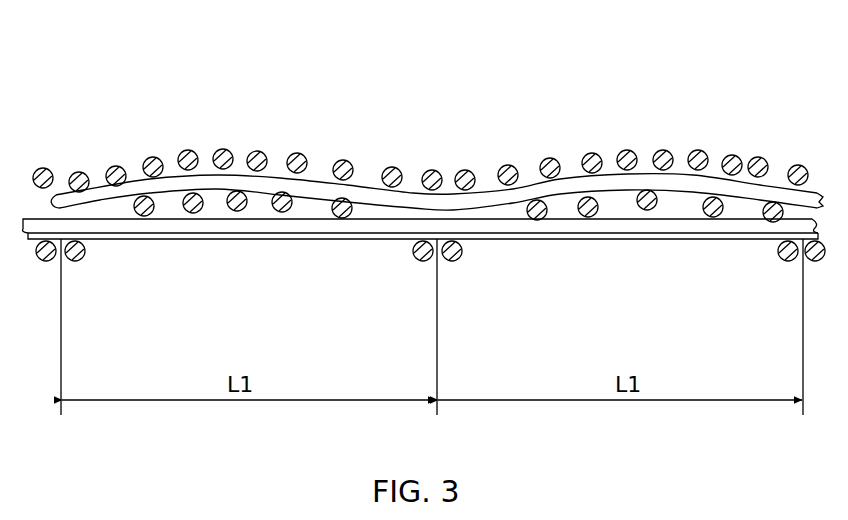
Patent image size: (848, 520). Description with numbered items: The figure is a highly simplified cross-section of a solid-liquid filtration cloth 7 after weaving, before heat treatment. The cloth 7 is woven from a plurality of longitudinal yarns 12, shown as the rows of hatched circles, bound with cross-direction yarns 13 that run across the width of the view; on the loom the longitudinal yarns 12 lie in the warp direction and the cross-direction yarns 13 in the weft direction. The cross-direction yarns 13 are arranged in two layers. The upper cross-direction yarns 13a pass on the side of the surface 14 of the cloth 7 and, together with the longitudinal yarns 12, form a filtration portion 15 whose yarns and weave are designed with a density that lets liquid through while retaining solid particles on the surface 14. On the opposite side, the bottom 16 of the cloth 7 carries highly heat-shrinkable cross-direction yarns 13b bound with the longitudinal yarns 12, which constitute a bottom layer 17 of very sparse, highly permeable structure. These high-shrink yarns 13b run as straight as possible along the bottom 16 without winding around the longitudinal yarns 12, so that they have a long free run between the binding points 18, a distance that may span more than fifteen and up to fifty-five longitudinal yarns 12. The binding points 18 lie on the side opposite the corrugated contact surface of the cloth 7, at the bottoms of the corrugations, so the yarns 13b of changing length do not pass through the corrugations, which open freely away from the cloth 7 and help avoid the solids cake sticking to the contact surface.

The solid-liquid filtration cloth 7 is at (558, 66).
The longitudinal yarns 12 is at (257, 152).
The cross-direction yarns 13 is at (27, 198).
The cross-direction yarns on the surface side 13a is at (313, 184).
The highly heat-shrinkable cross-direction yarns 13b is at (212, 220).
The surface 14 is at (163, 78).
The filtration portion 15 is at (170, 146).
The bottom 16 is at (190, 269).
The bottom layer 17 is at (298, 257).
The binding points 18 is at (74, 285).